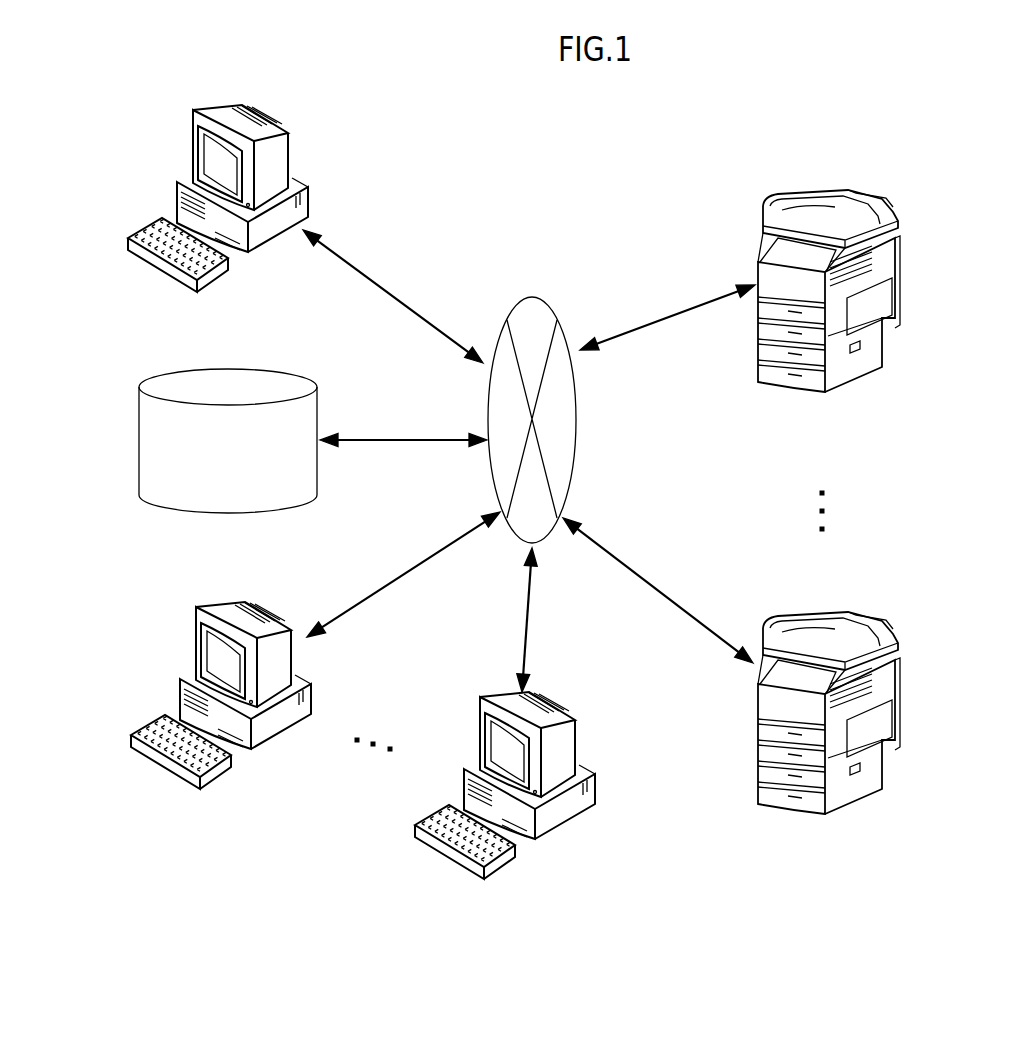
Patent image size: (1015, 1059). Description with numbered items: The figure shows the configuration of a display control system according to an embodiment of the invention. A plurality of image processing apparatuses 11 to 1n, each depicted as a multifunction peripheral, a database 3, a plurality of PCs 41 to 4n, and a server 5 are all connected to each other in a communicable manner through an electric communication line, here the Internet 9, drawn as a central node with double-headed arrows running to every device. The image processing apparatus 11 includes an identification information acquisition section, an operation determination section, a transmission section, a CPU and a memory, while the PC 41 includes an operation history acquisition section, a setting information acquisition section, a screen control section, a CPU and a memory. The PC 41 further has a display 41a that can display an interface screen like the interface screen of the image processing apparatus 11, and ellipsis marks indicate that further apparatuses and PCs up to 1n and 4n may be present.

The server 5 is at (194, 153).
The database 3 is at (138, 448).
The Internet 9 is at (580, 437).
The image processing apparatus 11 is at (900, 287).
The image processing apparatus 1n is at (901, 709).
The PC 41 is at (209, 712).
The display 41a is at (208, 668).
The PC 4n is at (482, 737).